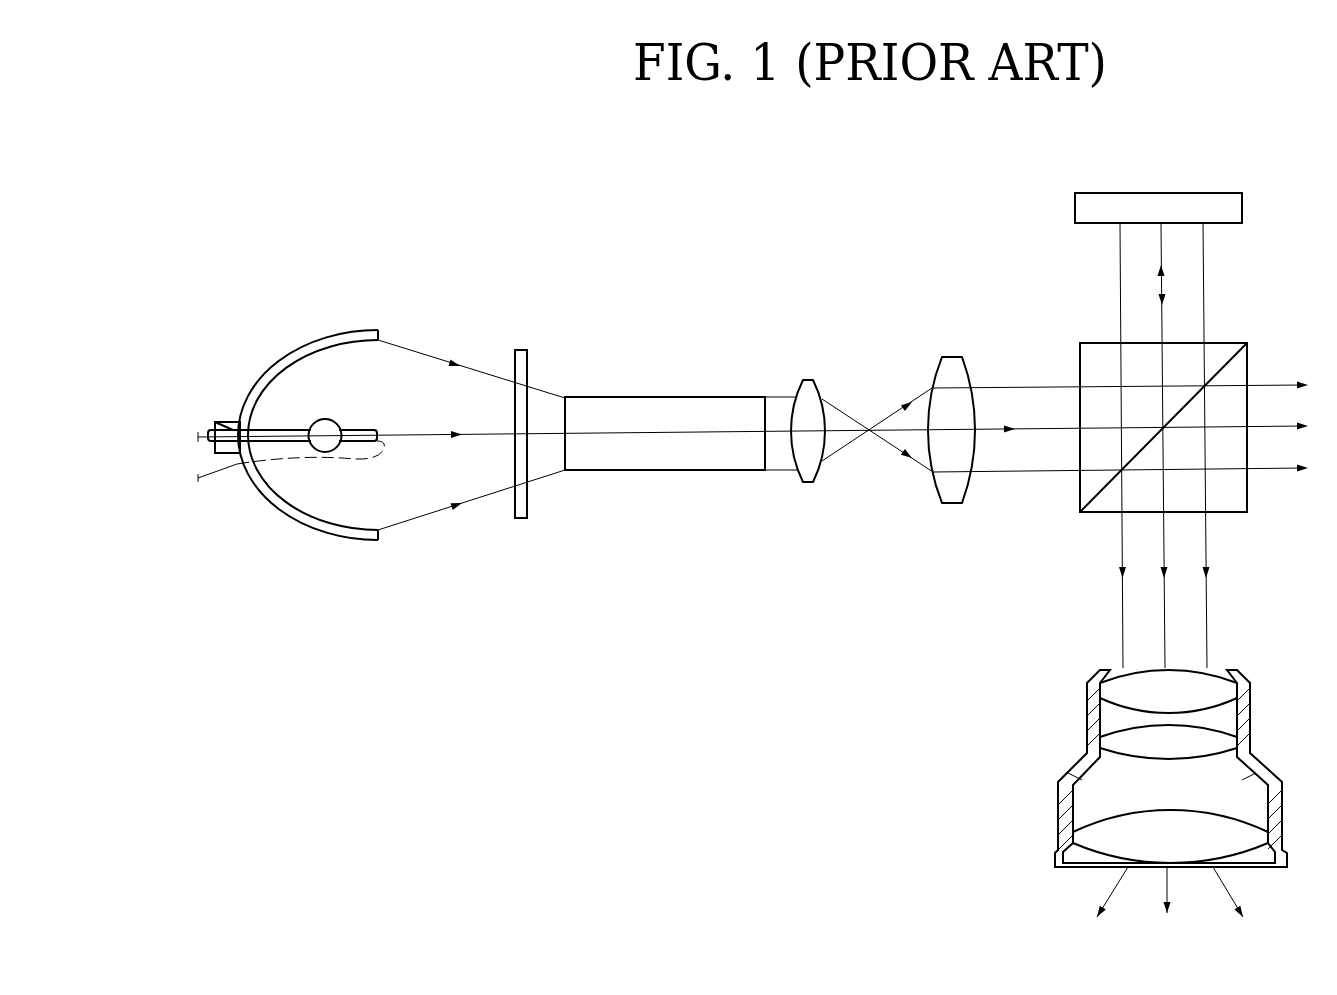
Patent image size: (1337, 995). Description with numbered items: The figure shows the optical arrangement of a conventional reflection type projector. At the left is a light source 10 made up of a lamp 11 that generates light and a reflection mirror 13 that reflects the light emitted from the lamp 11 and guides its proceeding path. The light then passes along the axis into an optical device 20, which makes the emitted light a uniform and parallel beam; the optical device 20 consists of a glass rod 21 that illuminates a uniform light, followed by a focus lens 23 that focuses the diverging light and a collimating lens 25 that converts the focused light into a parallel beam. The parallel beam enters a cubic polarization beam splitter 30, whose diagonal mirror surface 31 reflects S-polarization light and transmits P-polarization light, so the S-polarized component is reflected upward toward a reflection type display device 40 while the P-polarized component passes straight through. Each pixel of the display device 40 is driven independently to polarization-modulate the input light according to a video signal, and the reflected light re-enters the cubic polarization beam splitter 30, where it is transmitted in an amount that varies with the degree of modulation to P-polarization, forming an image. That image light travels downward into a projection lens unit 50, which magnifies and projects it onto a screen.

The light source 10 is at (313, 432).
The lamp 11 is at (335, 418).
The reflection mirror 13 is at (352, 545).
The optical device 20 is at (777, 373).
The glass rod 21 is at (727, 397).
The focus lens 23 is at (810, 377).
The collimating lens 25 is at (958, 399).
The cubic polarization beam splitter 30 is at (1189, 389).
The mirror surface 31 is at (1223, 360).
The reflection type display device 40 is at (1243, 193).
The projection lens unit 50 is at (1264, 694).